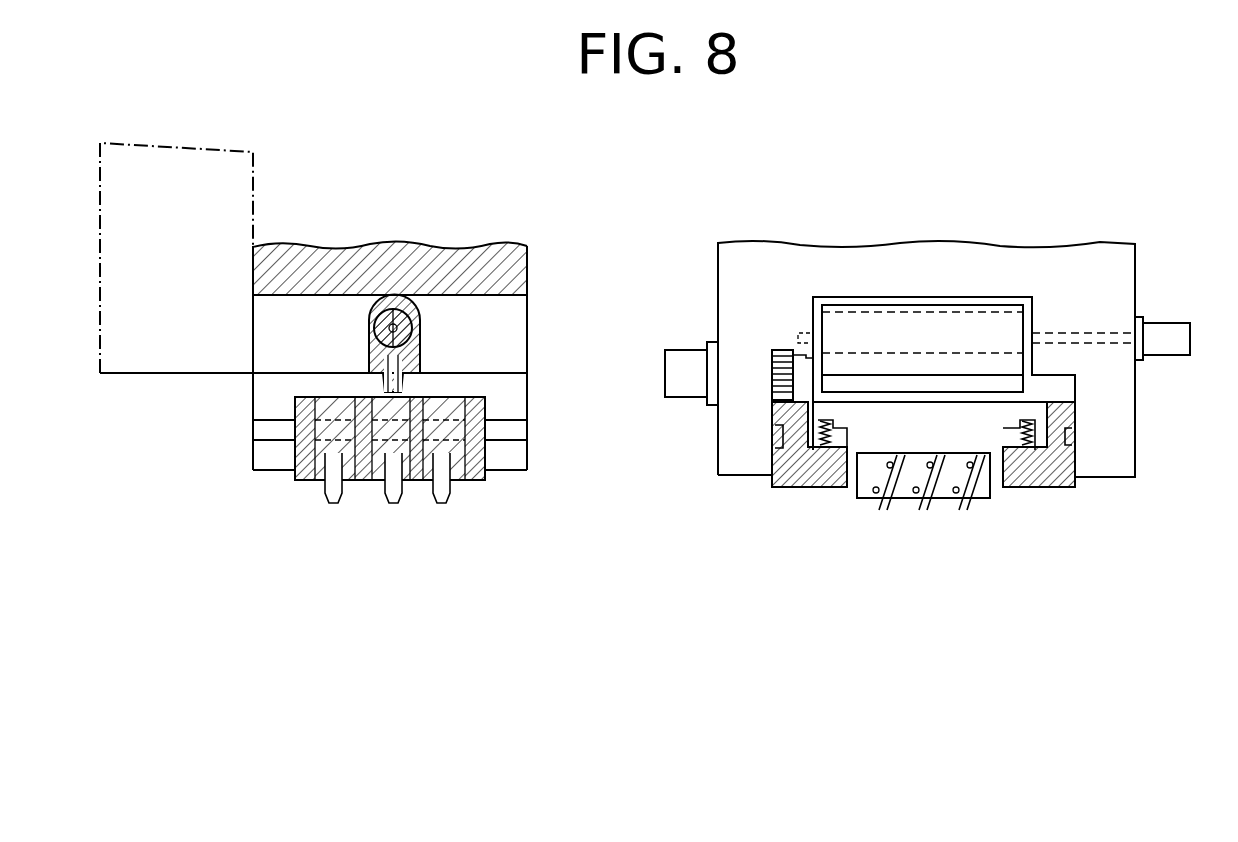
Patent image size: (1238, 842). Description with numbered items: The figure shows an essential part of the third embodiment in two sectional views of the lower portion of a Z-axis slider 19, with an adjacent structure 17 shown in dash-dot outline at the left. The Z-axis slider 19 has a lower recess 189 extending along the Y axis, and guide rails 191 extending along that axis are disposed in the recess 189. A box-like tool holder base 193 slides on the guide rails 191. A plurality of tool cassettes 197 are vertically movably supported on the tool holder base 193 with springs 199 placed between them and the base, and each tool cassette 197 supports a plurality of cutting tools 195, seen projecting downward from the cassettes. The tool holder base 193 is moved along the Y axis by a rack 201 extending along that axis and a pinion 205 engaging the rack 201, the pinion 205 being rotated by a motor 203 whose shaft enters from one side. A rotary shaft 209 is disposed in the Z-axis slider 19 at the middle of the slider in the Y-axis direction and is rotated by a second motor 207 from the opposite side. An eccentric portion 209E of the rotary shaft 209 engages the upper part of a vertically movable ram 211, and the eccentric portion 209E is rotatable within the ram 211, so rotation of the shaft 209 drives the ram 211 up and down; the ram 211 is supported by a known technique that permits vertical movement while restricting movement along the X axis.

The housing 17 is at (230, 152).
The Z-axis slider 19 is at (313, 245).
The lower recess 189 is at (1083, 392).
The guide rails 191 is at (527, 434).
The tool holder base 193 is at (485, 483).
The cutting tools 195 is at (445, 504).
The tool cassettes 197 is at (310, 478).
The springs 199 is at (795, 487).
The rack 201 is at (772, 400).
The motor 203 is at (685, 357).
The pinion 205 is at (783, 350).
The motor 207 is at (1163, 325).
The rotary shaft 209 is at (372, 325).
The eccentric portion 209E is at (413, 297).
The ram 211 is at (415, 358).